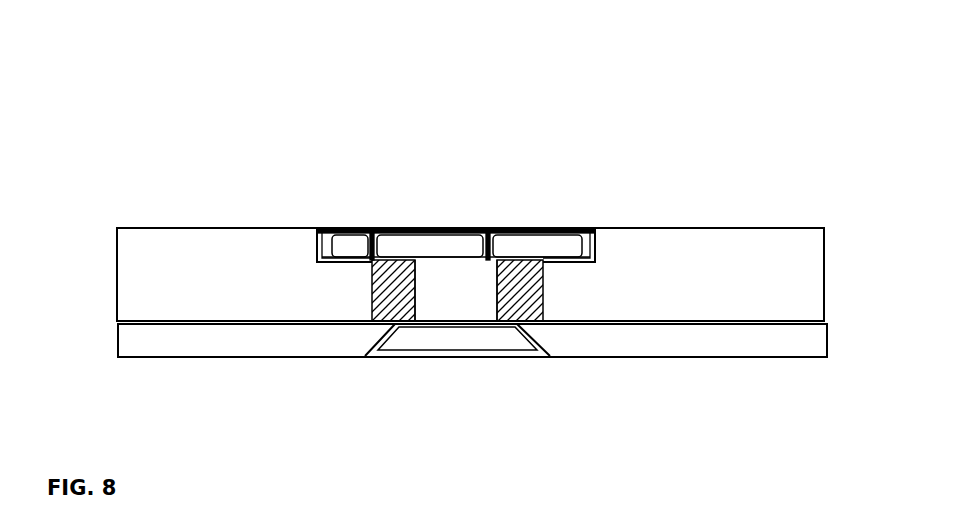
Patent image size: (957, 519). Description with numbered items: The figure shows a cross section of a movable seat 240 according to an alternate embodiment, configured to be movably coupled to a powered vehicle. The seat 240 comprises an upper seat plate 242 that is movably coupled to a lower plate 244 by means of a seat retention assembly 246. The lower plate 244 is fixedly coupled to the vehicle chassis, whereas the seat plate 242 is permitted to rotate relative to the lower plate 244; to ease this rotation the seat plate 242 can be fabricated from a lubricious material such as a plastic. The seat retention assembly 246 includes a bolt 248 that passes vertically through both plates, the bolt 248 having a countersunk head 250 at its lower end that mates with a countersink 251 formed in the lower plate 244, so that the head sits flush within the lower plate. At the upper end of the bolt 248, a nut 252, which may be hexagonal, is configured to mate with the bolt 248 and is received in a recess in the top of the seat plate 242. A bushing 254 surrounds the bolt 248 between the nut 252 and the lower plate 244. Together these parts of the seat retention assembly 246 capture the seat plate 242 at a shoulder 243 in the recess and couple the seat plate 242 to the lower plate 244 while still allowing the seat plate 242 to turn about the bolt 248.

The movable seat 240 is at (525, 101).
The seat plate 242 is at (724, 255).
The shoulder 243 is at (317, 247).
The lower plate 244 is at (727, 358).
The seat retention assembly 246 is at (537, 221).
The bolt 248 is at (462, 295).
The countersunk head 250 is at (443, 336).
The countersink 251 is at (367, 347).
The nut 252 is at (442, 242).
The bushing 254 is at (371, 258).